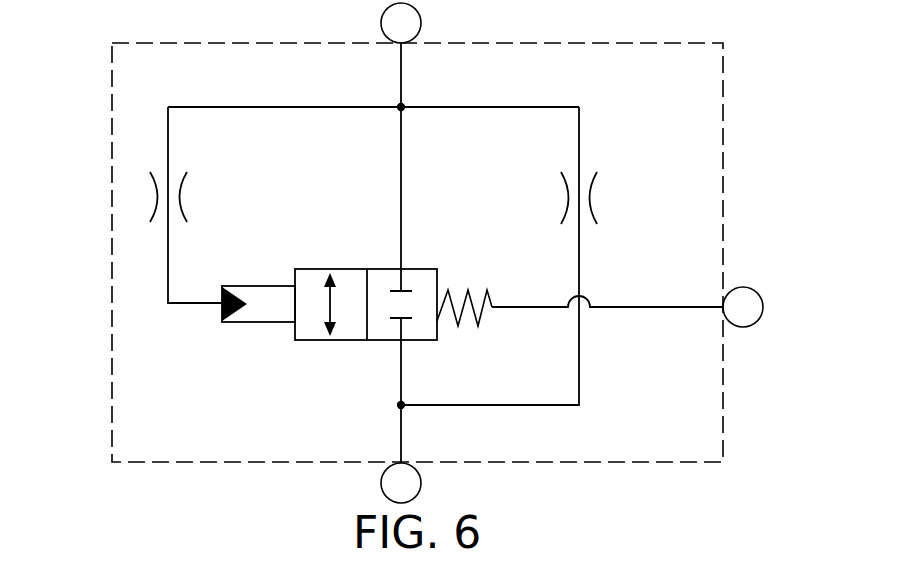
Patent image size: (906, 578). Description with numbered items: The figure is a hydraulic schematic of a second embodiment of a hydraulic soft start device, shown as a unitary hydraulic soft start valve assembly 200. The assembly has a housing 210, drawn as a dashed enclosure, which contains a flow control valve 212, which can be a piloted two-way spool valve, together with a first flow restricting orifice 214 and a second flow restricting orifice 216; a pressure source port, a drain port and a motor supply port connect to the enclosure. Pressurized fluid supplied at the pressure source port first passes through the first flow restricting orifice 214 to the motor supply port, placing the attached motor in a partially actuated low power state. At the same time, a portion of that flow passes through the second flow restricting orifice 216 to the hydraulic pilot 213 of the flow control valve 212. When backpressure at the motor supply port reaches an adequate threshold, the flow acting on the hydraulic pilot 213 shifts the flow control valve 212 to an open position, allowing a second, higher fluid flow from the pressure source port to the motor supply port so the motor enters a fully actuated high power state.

The unitary hydraulic soft start valve assembly 200 is at (90, 102).
The housing 210 is at (725, 72).
The flow control valve 212 is at (317, 341).
The hydraulic pilot 213 is at (255, 323).
The first flow restricting orifice 214 is at (600, 189).
The second flow restricting orifice 216 is at (152, 197).